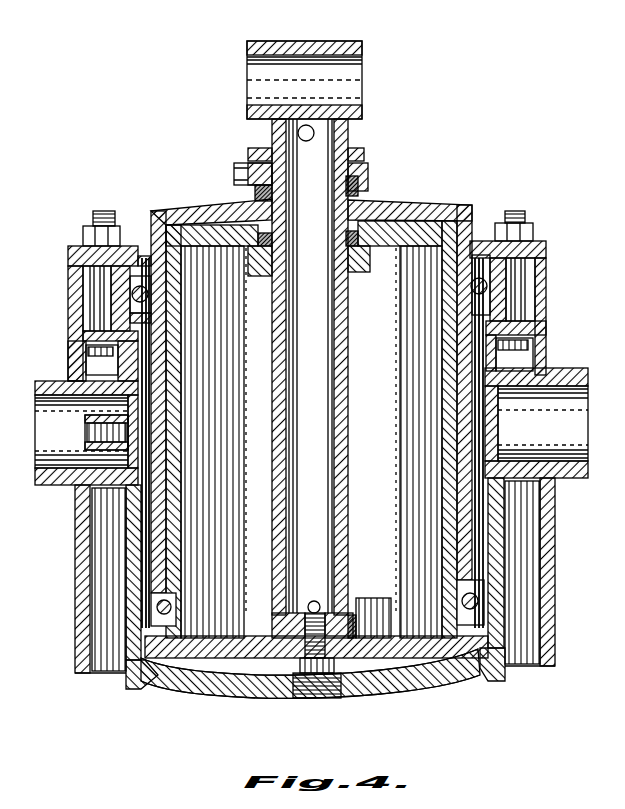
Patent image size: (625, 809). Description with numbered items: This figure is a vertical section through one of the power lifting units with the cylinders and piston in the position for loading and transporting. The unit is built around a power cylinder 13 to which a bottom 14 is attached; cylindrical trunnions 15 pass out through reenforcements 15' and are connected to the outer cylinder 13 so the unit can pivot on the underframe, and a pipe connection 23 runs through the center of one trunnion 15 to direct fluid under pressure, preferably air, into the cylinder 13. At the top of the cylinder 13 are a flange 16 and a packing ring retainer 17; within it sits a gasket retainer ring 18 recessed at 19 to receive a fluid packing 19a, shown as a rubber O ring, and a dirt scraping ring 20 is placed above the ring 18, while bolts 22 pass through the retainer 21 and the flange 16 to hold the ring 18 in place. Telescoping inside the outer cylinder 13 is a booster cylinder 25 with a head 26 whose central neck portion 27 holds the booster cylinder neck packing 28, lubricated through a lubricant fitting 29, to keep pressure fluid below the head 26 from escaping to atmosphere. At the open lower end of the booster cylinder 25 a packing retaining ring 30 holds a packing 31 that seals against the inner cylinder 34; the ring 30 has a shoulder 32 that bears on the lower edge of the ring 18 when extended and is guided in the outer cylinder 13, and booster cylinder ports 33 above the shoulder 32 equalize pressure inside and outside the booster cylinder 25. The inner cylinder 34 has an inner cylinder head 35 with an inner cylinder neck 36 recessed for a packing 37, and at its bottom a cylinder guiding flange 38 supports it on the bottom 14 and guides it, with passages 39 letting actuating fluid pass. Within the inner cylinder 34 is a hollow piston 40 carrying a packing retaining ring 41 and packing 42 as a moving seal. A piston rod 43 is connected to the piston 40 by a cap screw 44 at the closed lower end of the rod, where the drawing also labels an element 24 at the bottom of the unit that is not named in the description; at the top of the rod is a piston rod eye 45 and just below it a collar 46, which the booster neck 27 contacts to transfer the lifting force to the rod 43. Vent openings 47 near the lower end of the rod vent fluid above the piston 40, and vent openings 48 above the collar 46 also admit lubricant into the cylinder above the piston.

The power cylinder 13 is at (120, 523).
The bottom 14 is at (378, 673).
The trunnions 15 is at (309, 427).
The reenforcements 15' is at (310, 575).
The flange 16 is at (517, 322).
The packing ring retainer 17 is at (533, 257).
The gasket retainer ring 18 is at (500, 283).
The recess 19 is at (117, 295).
The fluid packing 19a is at (125, 282).
The dirt scraping ring 20 is at (463, 235).
The retainer 21 is at (525, 238).
The bolts 22 is at (98, 204).
The pipe connection 23 is at (100, 410).
The bolt 24 is at (317, 673).
The booster cylinder 25 is at (143, 362).
The booster cylinder head 26 is at (409, 194).
The neck portion 27 is at (357, 160).
The booster cylinder neck packing 28 is at (350, 186).
The lubricant fitting 29 is at (237, 163).
The packing retaining ring 30 is at (142, 617).
The packing 31 is at (147, 598).
The shoulder 32 is at (145, 578).
The booster cylinder ports 33 is at (185, 491).
The inner cylinder 34 is at (437, 391).
The inner cylinder head 35 is at (180, 222).
The inner cylinder neck 36 is at (352, 264).
The packing 37 is at (250, 268).
The cylinder guiding flange 38 is at (127, 682).
The passages 39 is at (163, 673).
The piston 40 is at (227, 658).
The packing retaining ring 41 is at (417, 590).
The packing 42 is at (413, 608).
The piston rod 43 is at (340, 345).
The cap screw 44 is at (288, 668).
The piston rod eye 45 is at (343, 72).
The collar 46 is at (352, 140).
The vent openings 47 is at (311, 600).
The vent openings 48 is at (290, 125).